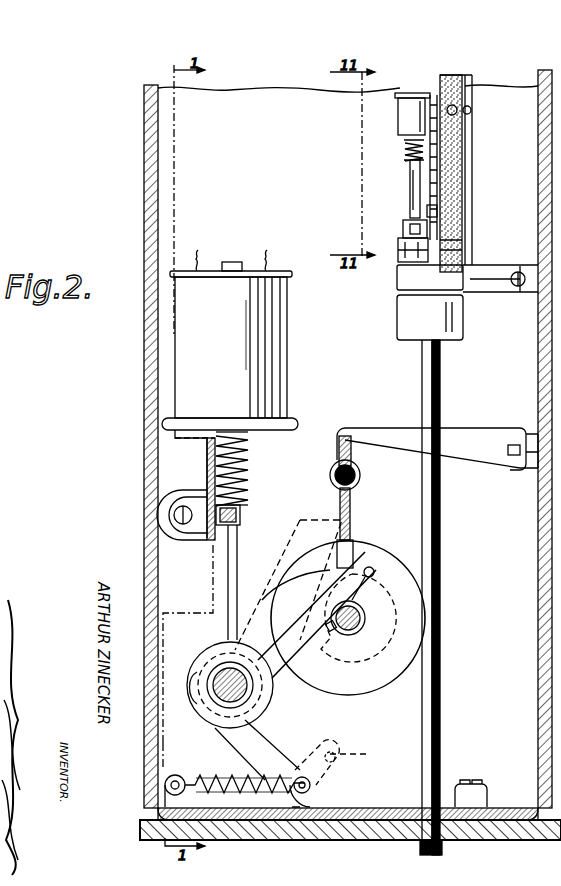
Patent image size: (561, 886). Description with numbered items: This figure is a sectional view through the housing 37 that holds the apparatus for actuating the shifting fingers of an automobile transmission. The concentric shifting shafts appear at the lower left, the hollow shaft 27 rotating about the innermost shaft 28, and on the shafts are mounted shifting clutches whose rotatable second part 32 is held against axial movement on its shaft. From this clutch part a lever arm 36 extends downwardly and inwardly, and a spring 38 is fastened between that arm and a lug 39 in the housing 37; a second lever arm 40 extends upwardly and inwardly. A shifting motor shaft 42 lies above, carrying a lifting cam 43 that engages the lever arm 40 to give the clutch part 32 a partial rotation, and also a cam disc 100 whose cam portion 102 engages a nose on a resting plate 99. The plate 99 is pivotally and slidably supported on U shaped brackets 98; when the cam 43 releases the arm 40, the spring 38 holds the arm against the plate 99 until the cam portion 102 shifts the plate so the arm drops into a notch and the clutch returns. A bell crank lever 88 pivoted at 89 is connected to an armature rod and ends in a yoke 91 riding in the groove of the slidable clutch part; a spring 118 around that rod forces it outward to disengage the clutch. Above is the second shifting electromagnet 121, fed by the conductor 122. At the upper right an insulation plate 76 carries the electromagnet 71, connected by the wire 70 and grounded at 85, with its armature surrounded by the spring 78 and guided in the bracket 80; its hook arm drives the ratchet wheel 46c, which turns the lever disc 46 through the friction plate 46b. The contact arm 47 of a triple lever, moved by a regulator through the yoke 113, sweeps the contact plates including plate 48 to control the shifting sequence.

The hollow shaft 27 is at (240, 683).
The innermost shaft 28 is at (240, 695).
The second part of the shifting clutch 32 is at (210, 720).
The lever arm 36 is at (315, 805).
The housing 37 is at (144, 392).
The spring 38 is at (244, 768).
The lug 39 is at (181, 781).
The second lever arm 40 is at (290, 612).
The shaft 42 is at (352, 632).
The lifting cam 43 is at (355, 590).
The lever disc 46 is at (425, 200).
The friction plate 46b is at (437, 212).
The ratchet wheel 46c is at (412, 226).
The contact arm 47 is at (430, 140).
The contact plate 48 is at (455, 96).
The wire 70 is at (397, 93).
The electromagnet 71 is at (412, 115).
The insulation plate 76 is at (447, 243).
The spring 78 is at (406, 152).
The guide bracket 80 is at (410, 172).
The ground 85 is at (432, 86).
The bell crank lever 88 is at (237, 565).
The pivot 89 is at (244, 520).
The yoke 91 is at (204, 652).
The U shaped bracket 98 is at (468, 432).
The resting plate 99 is at (336, 490).
The cam disc 100 is at (402, 570).
The cam portion 102 is at (396, 632).
The yoke 113 is at (398, 254).
The spring 118 is at (244, 470).
The second shifting electromagnet 121 is at (268, 325).
The conductor 122 is at (196, 262).